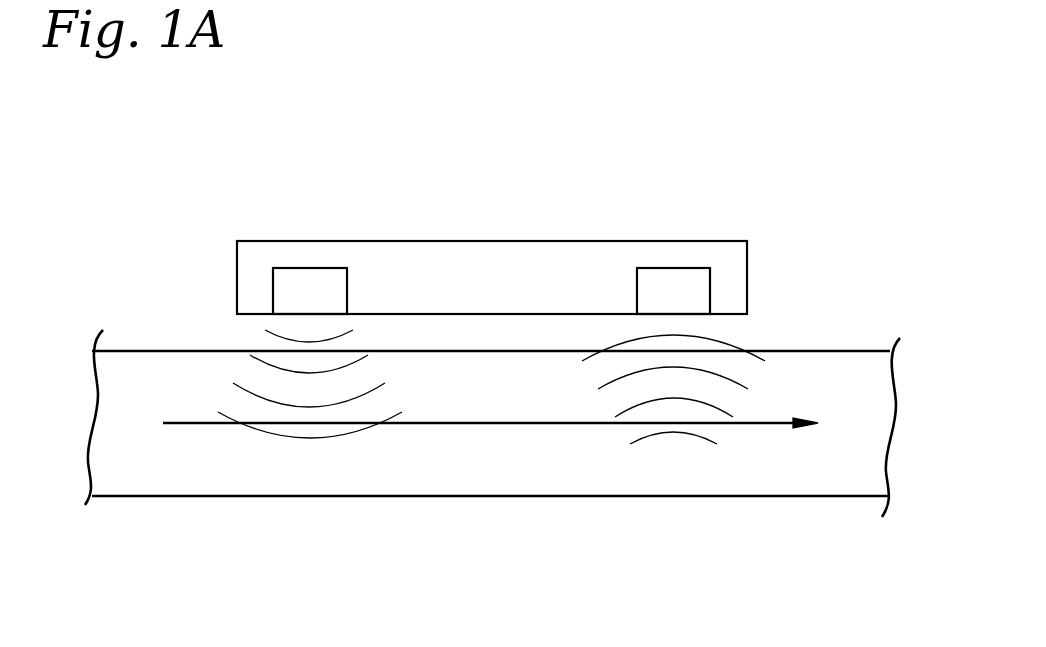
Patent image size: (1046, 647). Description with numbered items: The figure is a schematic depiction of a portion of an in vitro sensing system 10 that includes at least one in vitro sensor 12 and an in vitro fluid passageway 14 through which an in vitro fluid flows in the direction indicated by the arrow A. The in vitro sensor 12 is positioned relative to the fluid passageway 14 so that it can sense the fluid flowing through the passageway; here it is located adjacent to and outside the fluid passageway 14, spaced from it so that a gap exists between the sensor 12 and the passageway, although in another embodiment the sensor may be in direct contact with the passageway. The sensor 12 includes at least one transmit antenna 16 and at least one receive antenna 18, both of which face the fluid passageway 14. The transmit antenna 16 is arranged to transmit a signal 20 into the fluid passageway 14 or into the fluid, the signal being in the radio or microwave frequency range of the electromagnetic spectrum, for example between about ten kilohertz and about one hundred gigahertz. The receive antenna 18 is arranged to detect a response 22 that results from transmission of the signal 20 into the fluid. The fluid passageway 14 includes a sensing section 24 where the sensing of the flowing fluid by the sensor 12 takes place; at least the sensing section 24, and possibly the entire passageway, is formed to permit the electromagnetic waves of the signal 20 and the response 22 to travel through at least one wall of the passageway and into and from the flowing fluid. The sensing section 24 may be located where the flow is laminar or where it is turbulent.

The in vitro sensing system 10 is at (847, 163).
The in vitro sensor 12 is at (533, 238).
The in vitro fluid passageway 14 is at (697, 500).
The transmit antenna 16 is at (298, 268).
The receive antenna 18 is at (687, 268).
The signal 20 is at (270, 432).
The response 22 is at (725, 343).
The sensing section 24 is at (422, 348).
The arrow A is at (552, 423).